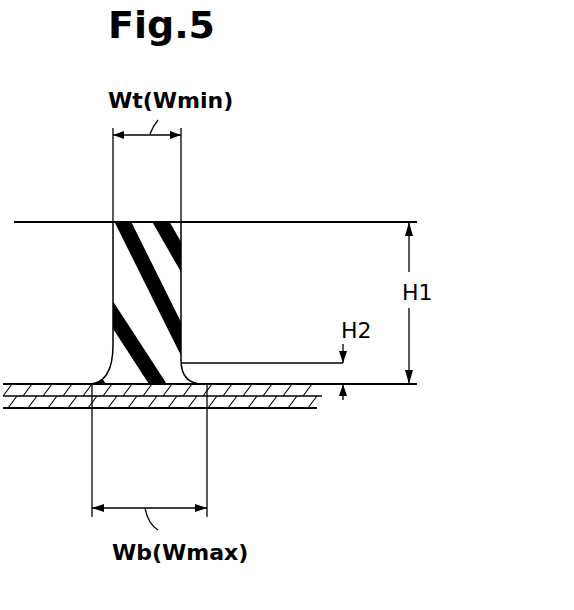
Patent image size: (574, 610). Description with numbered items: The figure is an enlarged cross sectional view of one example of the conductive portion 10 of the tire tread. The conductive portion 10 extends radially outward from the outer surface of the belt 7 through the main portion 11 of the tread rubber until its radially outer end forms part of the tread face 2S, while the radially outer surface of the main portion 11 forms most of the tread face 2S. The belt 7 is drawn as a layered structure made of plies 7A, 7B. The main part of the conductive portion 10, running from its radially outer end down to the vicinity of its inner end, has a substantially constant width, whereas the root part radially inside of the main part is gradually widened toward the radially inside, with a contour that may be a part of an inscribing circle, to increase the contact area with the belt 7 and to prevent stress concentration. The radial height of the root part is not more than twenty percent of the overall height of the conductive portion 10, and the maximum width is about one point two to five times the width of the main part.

The conductive portion 10 is at (125, 278).
The tread face 2S is at (282, 221).
The main portion 11 is at (253, 270).
The belt 7 is at (220, 457).
The first substrate layer 7A is at (299, 408).
The second substrate layer 7B is at (313, 403).